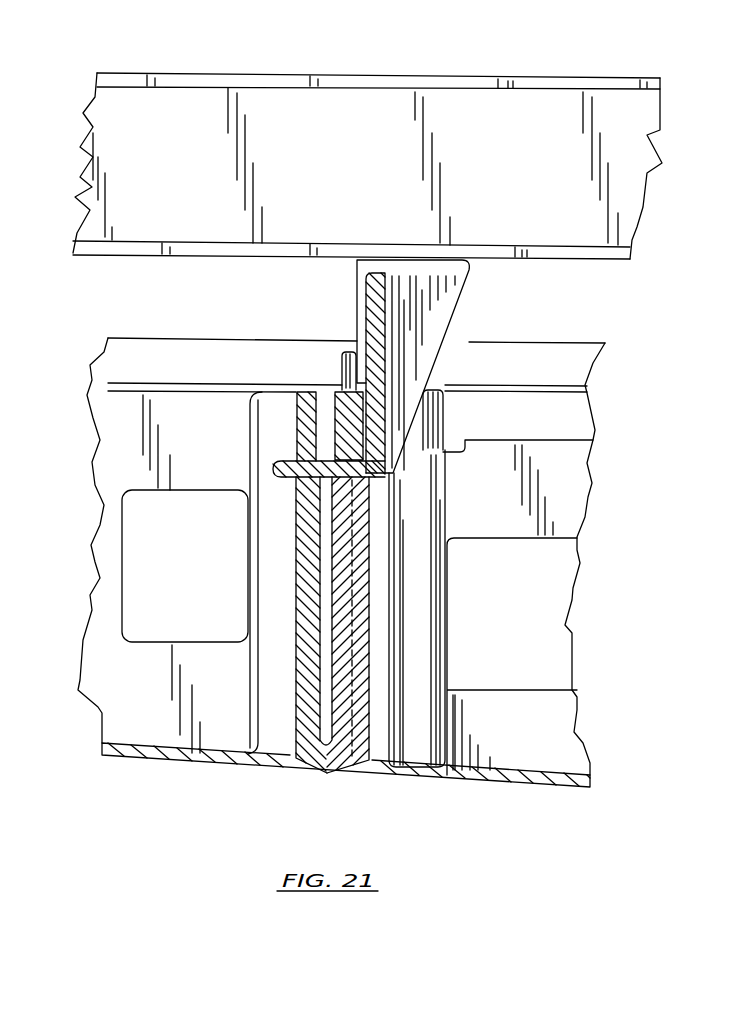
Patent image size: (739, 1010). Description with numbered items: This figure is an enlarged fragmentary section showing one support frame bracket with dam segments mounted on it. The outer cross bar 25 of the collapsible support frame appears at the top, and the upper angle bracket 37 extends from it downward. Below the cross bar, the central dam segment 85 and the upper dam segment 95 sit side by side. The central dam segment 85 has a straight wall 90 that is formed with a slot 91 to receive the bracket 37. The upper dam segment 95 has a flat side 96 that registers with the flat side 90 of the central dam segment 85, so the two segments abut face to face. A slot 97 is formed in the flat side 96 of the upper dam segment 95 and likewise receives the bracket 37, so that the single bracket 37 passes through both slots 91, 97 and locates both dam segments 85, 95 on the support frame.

The outer cross bar 25 is at (470, 107).
The upper angle bracket 37 is at (384, 373).
The central dam segment 85 is at (548, 718).
The straight wall 90 is at (370, 710).
The slot 91 is at (362, 479).
The upper dam segment 95 is at (122, 700).
The flat side 96 is at (298, 708).
The slot 97 is at (317, 461).